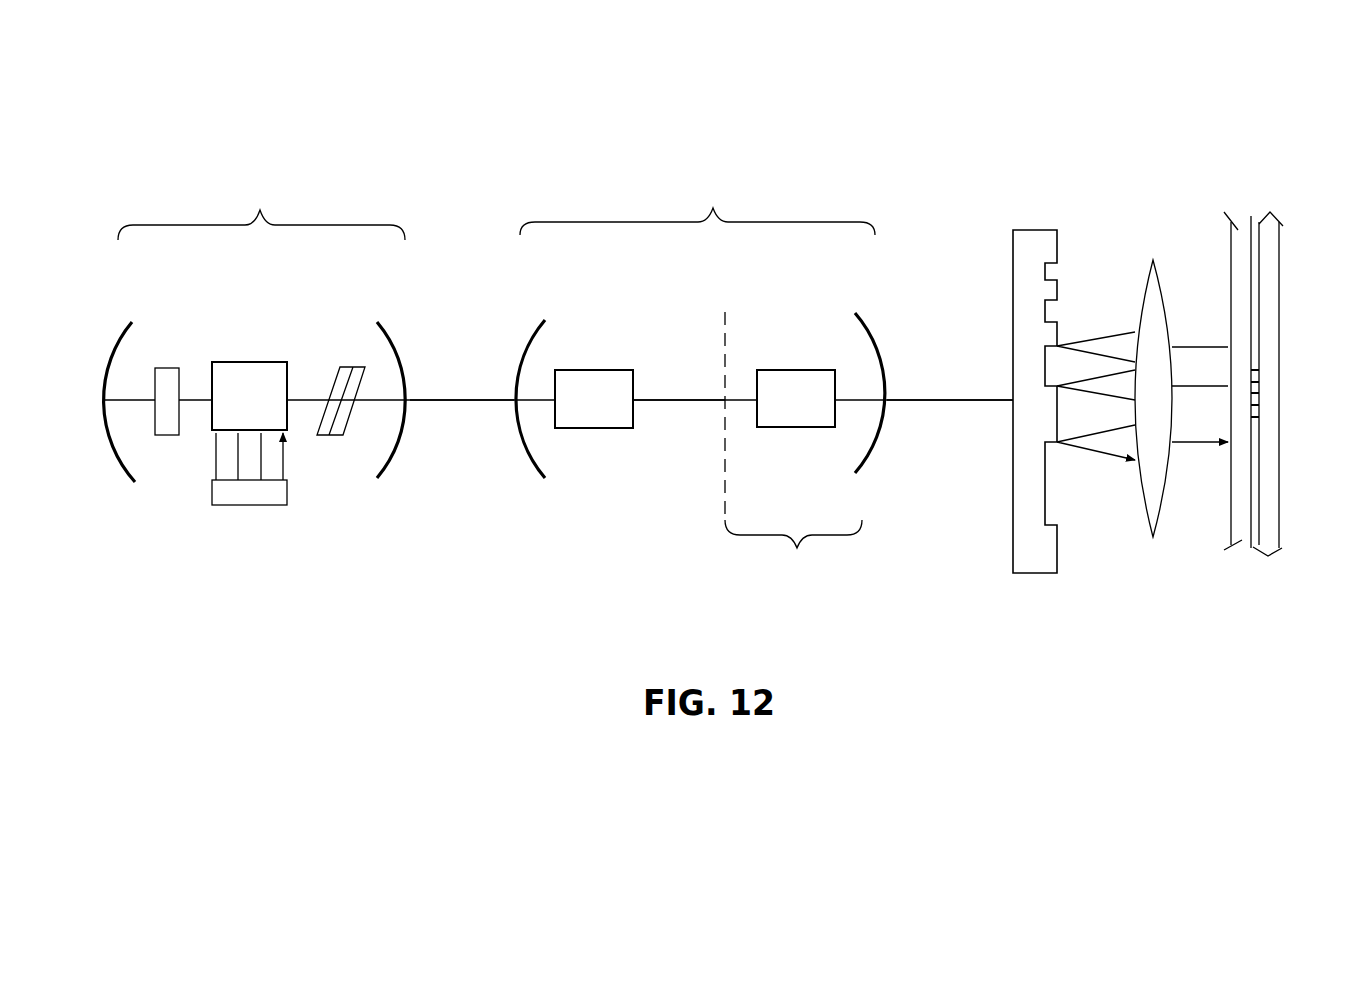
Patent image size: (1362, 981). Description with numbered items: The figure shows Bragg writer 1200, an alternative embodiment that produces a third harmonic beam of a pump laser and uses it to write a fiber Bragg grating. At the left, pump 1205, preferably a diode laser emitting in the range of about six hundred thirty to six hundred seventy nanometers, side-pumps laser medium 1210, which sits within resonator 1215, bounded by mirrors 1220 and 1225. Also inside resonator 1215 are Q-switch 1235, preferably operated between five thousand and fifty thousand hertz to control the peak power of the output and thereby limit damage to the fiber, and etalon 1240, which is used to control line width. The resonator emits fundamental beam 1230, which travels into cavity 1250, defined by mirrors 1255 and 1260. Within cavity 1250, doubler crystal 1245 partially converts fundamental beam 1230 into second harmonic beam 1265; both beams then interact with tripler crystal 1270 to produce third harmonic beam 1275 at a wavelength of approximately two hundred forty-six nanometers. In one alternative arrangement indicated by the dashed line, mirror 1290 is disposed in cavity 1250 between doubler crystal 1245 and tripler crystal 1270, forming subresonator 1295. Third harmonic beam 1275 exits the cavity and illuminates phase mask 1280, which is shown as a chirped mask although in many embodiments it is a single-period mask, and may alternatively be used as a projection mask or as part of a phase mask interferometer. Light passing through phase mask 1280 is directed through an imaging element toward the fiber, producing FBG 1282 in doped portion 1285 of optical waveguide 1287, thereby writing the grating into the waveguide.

The Bragg writer 1200 is at (490, 88).
The pump 1205 is at (243, 505).
The laser medium 1210 is at (243, 362).
The resonator 1215 is at (307, 225).
The mirror 1220 is at (130, 323).
The mirror 1225 is at (389, 323).
The fundamental beam 1230 is at (468, 402).
The Q-switch 1235 is at (166, 437).
The etalon 1240 is at (333, 437).
The doubler crystal 1245 is at (610, 370).
The cavity 1250 is at (626, 221).
The mirror 1255 is at (543, 481).
The mirror 1260 is at (868, 330).
The second harmonic beam 1265 is at (657, 402).
The tripler crystal 1270 is at (787, 370).
The third harmonic beam 1275 is at (948, 402).
The phase mask 1280 is at (1038, 568).
The FBG 1282 is at (1260, 387).
The doped portion 1285 is at (1254, 222).
The optical waveguide 1287 is at (1232, 265).
The mirror 1290 is at (725, 318).
The subresonator 1295 is at (824, 540).